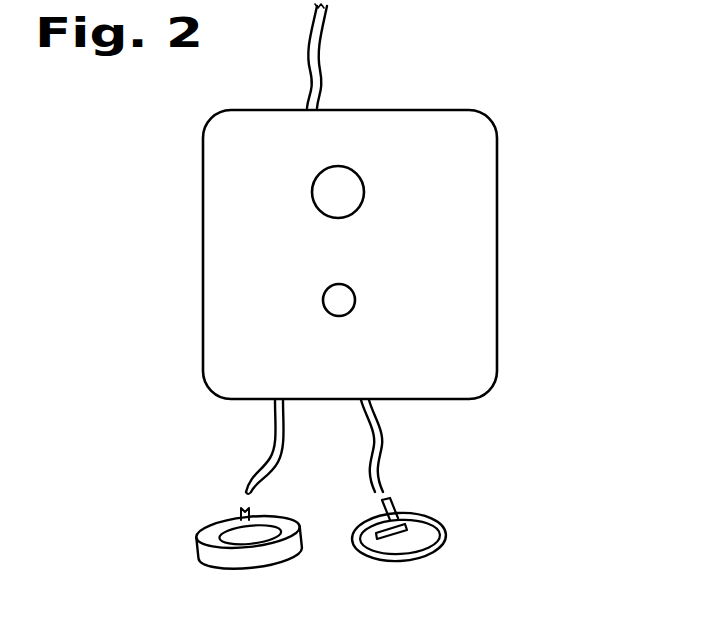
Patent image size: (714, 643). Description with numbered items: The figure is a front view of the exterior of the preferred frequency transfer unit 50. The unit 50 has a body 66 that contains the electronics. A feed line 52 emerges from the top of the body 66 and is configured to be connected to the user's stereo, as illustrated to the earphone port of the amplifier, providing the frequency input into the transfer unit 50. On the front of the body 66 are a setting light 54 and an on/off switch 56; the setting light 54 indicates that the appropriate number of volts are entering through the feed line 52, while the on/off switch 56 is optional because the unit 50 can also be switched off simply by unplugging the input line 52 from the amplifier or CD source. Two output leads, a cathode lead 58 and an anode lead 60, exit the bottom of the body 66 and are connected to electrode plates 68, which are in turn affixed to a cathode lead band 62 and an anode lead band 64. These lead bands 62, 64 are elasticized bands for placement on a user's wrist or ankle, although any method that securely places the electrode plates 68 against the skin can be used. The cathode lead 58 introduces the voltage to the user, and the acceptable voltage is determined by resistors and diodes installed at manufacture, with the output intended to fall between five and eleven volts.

The frequency transfer unit 50 is at (585, 151).
The feed line 52 is at (318, 50).
The setting light 54 is at (361, 181).
The on/off switch 56 is at (352, 291).
The cathode lead 58 is at (273, 440).
The anode lead 60 is at (378, 450).
The cathode lead band 62 is at (267, 546).
The anode lead band 64 is at (415, 553).
The body 66 is at (497, 345).
The electrode plates 68 is at (273, 528).